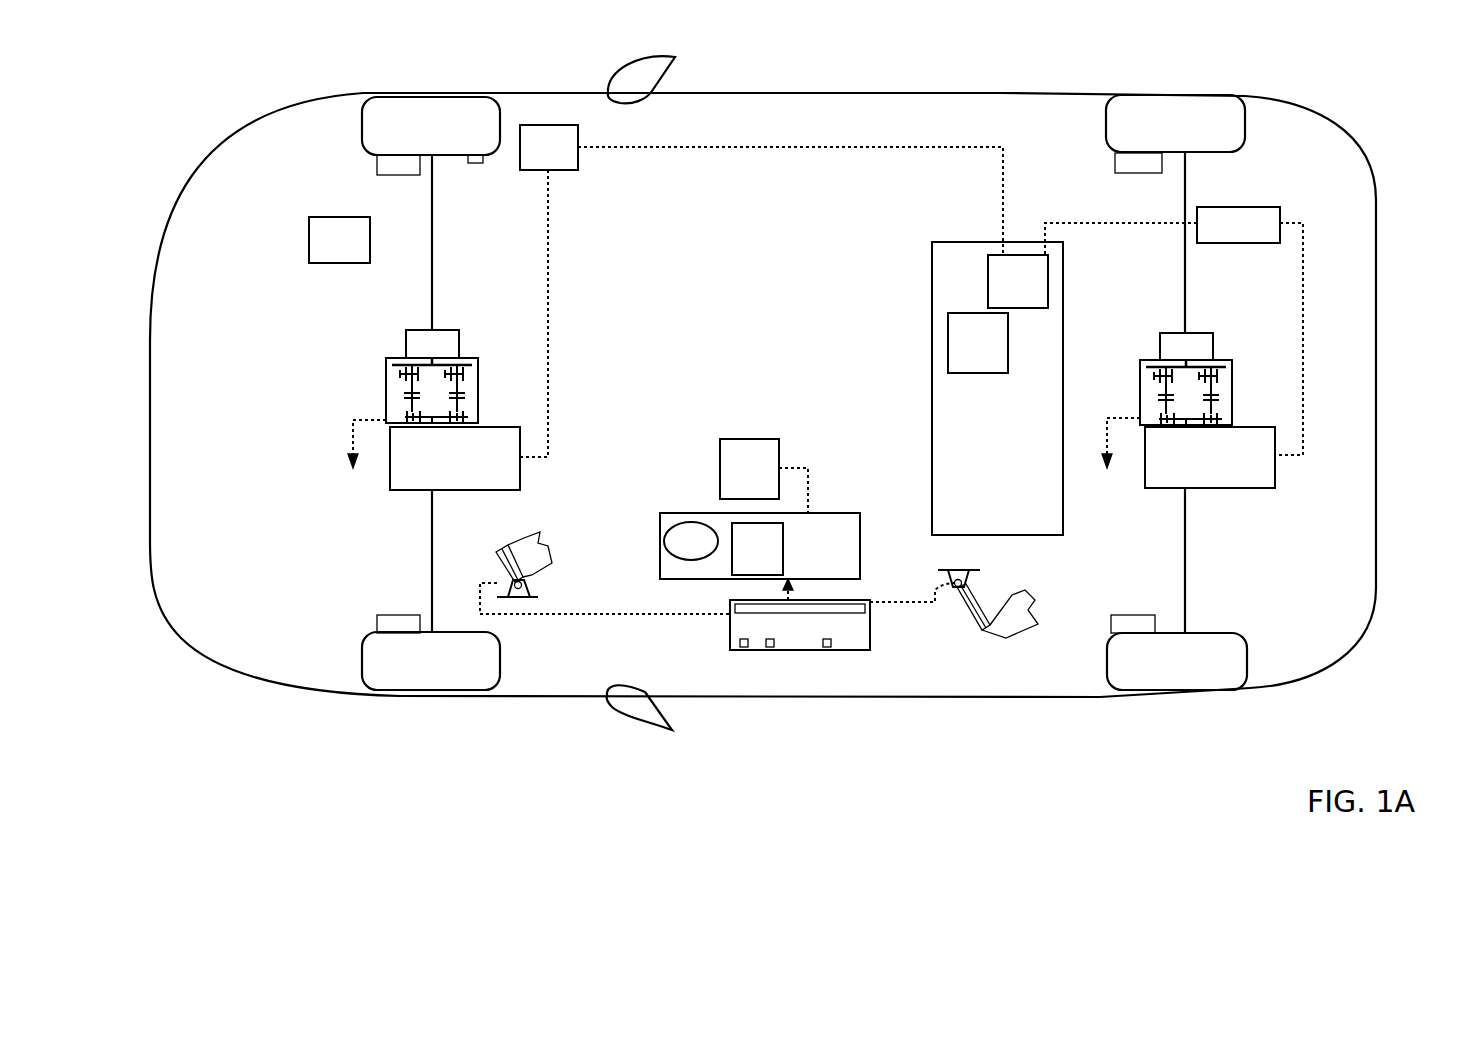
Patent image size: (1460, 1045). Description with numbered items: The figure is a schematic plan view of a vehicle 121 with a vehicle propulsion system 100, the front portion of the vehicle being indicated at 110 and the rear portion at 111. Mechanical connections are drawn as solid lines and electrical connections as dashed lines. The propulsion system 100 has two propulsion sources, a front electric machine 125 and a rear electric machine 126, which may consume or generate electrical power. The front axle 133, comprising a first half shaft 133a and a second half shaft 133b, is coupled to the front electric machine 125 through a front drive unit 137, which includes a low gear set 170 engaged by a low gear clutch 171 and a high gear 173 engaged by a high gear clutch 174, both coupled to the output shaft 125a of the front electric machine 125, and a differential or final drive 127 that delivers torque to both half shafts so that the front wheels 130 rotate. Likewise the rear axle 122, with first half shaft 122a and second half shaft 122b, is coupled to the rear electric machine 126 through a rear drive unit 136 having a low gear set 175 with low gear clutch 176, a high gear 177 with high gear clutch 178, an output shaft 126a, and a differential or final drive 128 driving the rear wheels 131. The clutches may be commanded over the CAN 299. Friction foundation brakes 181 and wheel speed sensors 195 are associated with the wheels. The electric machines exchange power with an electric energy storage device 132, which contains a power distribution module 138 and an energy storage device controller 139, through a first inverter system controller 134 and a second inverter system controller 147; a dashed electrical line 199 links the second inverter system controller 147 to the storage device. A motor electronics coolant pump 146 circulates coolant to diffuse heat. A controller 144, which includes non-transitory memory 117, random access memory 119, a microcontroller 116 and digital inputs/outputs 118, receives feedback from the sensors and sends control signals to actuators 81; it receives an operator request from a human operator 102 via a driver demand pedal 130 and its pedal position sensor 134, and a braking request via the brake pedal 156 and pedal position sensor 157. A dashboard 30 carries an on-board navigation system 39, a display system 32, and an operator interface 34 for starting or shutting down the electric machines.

The front portion of vehicle 110 is at (120, 185).
The rear portion of vehicle 111 is at (1420, 128).
The vehicle propulsion system 100 is at (836, 212).
The vehicle 121 is at (990, 93).
The front wheels 130 is at (485, 114).
The rear wheels 131 is at (1153, 105).
The friction foundation brakes 181 is at (769, 393).
The wheel speed sensor 195 is at (475, 163).
The first half shaft 133a is at (432, 220).
The second half shaft 133b is at (432, 557).
The front axle 133 is at (390, 524).
The first half shaft 122a is at (1185, 177).
The second half shaft 122b is at (1185, 590).
The rear axle 122 is at (1205, 283).
The motor electronics coolant pump 146 is at (339, 240).
The second inverter system controller 147 is at (549, 147).
The communication line 199 is at (918, 162).
The front drive unit 137 is at (553, 474).
The first inverter system controller 134 is at (528, 585).
The electric energy storage device 132 is at (1014, 440).
The power distribution module 138 is at (1018, 281).
The electric energy storage device controller 139 is at (978, 343).
The differential or final drive 127 is at (432, 344).
The differential or final drive 128 is at (1186, 346).
The low gear set 170 is at (385, 375).
The low gear clutch 171 is at (390, 400).
The high gear 173 is at (484, 375).
The high gear clutch 174 is at (478, 404).
The low gear set 175 is at (1137, 377).
The low gear clutch 176 is at (1142, 402).
The high gear 177 is at (1239, 375).
The high gear clutch 178 is at (1232, 404).
The front electric machine 125 is at (455, 458).
The output shaft 125a is at (432, 422).
The rear electric machine 126 is at (1210, 457).
The output shaft 126a is at (1186, 424).
The CAN 299 is at (368, 420).
The rear drive unit 136 is at (1298, 490).
The on-board navigation system 39 is at (764, 476).
The dashboard 30 is at (860, 517).
The display system 32 is at (701, 549).
The operator interface 34 is at (768, 556).
The controller 144 is at (800, 614).
The non-transitory memory 117 is at (744, 647).
The random access memory 119 is at (772, 647).
The microcontroller 116 is at (827, 647).
The digital inputs/outputs 118 is at (853, 613).
The actuators 81 is at (870, 643).
The pedal position sensor 157 is at (950, 585).
The brake pedal 156 is at (990, 630).
The human operator 102 is at (548, 545).